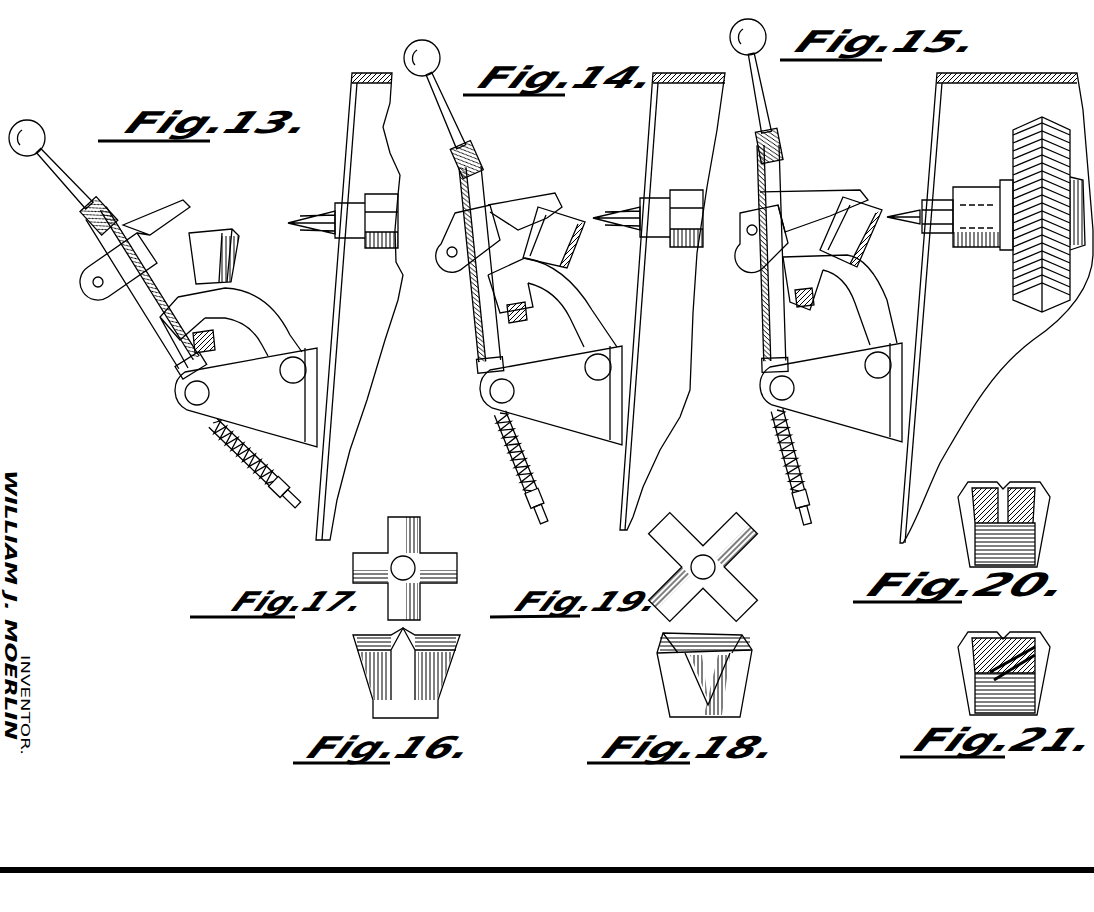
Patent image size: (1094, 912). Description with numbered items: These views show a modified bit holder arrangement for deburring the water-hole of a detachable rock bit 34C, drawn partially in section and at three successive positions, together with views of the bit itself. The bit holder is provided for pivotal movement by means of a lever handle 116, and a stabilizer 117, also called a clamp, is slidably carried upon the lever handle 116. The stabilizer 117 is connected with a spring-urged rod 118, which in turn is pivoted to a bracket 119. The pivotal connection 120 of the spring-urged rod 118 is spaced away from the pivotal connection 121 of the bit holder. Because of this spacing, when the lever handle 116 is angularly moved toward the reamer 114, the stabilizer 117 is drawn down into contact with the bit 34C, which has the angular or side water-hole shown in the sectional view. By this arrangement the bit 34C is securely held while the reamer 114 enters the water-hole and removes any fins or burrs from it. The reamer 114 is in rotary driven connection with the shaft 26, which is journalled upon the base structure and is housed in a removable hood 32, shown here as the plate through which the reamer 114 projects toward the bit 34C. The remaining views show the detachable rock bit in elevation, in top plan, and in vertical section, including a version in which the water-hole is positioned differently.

In FIG. 13, the removable hood 32 is at (362, 70).
In FIG. 14, the removable hood 32 is at (672, 70).
In FIG. 15, the removable hood 32 is at (993, 68).
In FIG. 13, the reamer 114 is at (310, 217).
In FIG. 14, the reamer 114 is at (613, 210).
In FIG. 15, the reamer 114 is at (903, 207).
In FIG. 13, the lever handle 116 is at (60, 192).
In FIG. 14, the lever handle 116 is at (447, 110).
In FIG. 15, the lever handle 116 is at (767, 87).
In FIG. 13, the stabilizer 117 is at (148, 213).
In FIG. 14, the stabilizer 117 is at (522, 200).
In FIG. 15, the stabilizer 117 is at (807, 187).
In FIG. 13, the spring-urged rod 118 is at (137, 332).
In FIG. 14, the spring-urged rod 118 is at (480, 330).
In FIG. 15, the spring-urged rod 118 is at (763, 330).
In FIG. 13, the bracket 119 is at (190, 415).
In FIG. 14, the bracket 119 is at (551, 395).
In FIG. 15, the bracket 119 is at (831, 392).
In FIG. 13, the pivotal connection 120 is at (185, 393).
In FIG. 14, the pivotal connection 120 is at (488, 391).
In FIG. 15, the pivotal connection 120 is at (770, 390).
In FIG. 13, the pivotal connection 121 is at (293, 383).
In FIG. 14, the pivotal connection 121 is at (584, 372).
In FIG. 15, the pivotal connection 121 is at (866, 367).
In FIG. 13, the bit 34C is at (217, 260).
In FIG. 14, the bit 34C is at (570, 213).
In FIG. 15, the bit 34C is at (857, 243).
In FIG. 15, the shaft 26 is at (1043, 243).